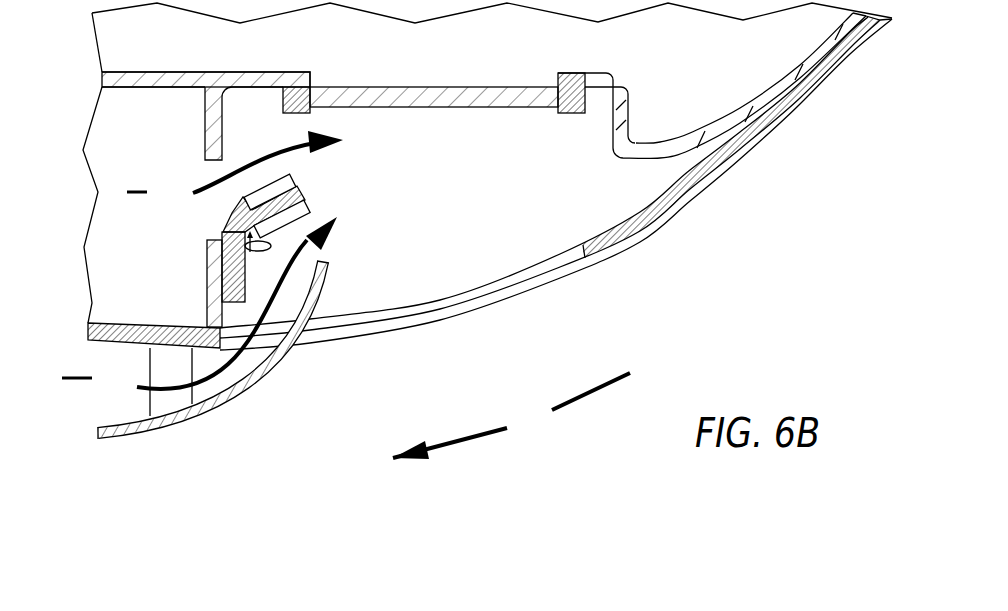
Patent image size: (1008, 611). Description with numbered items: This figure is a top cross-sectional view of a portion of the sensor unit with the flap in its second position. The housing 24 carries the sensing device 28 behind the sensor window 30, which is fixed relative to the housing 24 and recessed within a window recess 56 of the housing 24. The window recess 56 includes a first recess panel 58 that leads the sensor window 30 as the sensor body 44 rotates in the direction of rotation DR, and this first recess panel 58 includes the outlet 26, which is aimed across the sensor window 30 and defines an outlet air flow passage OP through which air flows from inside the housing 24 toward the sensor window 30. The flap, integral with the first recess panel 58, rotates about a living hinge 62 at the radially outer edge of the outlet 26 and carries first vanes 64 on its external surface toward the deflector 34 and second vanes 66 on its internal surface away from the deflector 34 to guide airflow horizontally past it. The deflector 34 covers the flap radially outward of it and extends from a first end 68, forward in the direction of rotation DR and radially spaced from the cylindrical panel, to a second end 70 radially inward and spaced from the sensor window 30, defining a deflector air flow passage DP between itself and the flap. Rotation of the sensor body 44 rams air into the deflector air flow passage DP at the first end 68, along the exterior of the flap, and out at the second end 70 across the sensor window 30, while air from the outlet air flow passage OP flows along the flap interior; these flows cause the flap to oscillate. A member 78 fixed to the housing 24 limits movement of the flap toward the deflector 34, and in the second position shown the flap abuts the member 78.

The housing 24 is at (640, 242).
The outlet 26 is at (201, 168).
The sensing device 28 is at (438, 60).
The sensor window 30 is at (570, 113).
The deflector 34 is at (268, 383).
The sensor body 44 is at (687, 151).
The window recess 56 is at (403, 275).
The first recess panel 58 is at (206, 309).
The living hinge 62 is at (226, 223).
The first vanes 64 is at (310, 200).
The second vanes 66 is at (267, 186).
The first end 68 is at (98, 430).
The second end 70 is at (327, 244).
The member 78 is at (258, 251).
The outlet air flow passage OP is at (235, 168).
The deflector air flow passage DP is at (97, 383).
The direction of rotation DR is at (511, 416).